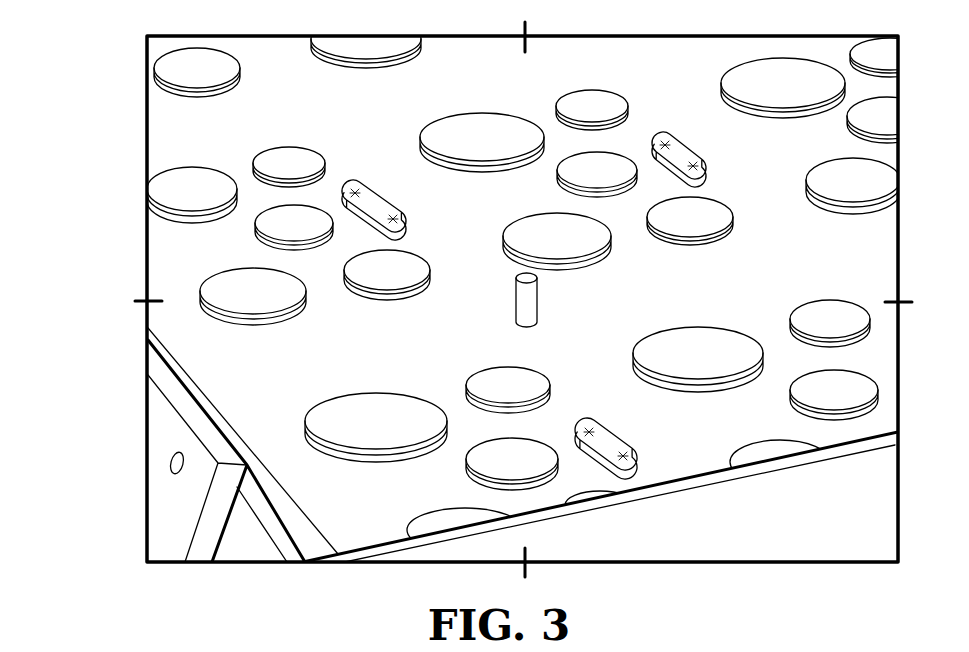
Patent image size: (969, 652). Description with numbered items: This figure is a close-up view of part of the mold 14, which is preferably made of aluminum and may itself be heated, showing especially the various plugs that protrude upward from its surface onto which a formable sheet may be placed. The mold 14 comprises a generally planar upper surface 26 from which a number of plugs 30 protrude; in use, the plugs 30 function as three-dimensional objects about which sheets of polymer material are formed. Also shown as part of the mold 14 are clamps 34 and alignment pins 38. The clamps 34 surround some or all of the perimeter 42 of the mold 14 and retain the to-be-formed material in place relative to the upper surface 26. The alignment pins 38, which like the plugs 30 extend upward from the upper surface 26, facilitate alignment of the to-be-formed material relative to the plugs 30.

The mold 14 is at (108, 316).
The upper surface 26 is at (287, 388).
The plugs 30 is at (238, 283).
The clamps 34 is at (187, 485).
The alignment pins 38 is at (530, 308).
The perimeter 42 is at (178, 352).